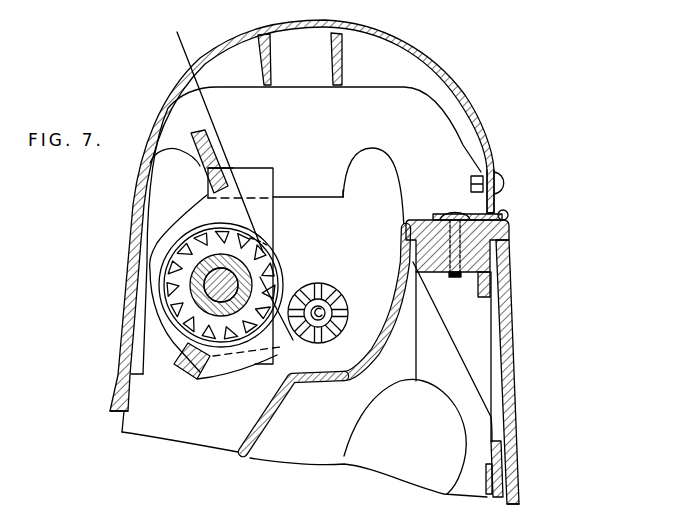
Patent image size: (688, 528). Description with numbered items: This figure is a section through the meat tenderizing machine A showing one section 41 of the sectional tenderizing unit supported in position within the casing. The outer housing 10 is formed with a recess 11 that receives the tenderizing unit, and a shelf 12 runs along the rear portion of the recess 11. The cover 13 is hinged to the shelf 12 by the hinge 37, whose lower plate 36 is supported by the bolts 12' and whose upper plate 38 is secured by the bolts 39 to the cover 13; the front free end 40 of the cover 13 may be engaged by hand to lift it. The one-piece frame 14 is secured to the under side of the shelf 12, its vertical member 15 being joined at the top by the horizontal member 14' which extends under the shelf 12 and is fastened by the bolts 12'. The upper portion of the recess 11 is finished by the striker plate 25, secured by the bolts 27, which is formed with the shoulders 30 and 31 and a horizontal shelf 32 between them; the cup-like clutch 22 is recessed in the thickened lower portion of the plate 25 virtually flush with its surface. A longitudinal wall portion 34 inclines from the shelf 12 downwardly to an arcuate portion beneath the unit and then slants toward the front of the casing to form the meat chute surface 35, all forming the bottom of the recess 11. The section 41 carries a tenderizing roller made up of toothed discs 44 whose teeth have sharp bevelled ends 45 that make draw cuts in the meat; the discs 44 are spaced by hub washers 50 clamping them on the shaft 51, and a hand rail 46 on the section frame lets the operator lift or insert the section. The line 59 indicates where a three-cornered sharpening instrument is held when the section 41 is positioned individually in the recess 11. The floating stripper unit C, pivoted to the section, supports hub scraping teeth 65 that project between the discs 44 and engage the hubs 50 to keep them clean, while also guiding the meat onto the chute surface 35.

The outer housing 10 is at (504, 241).
The recess 11 is at (421, 297).
The shelf 12 is at (373, 189).
The bolts 12' is at (467, 192).
The cover portion 13 is at (155, 123).
The frame 14 is at (531, 372).
The horizontal member 14' is at (515, 282).
The vertical member 15 is at (300, 38).
The clutches or couplers 22 is at (340, 292).
The end wear or striker metal plate 25 is at (394, 100).
The bolts 27 is at (272, 232).
The shoulder 30 is at (346, 170).
The shoulder 31 is at (198, 171).
The horizontal shelf 32 is at (285, 197).
The longitudinal wall portion 34 is at (402, 262).
The meat chute surface 35 is at (263, 417).
The lower plate 36 is at (436, 217).
The hinge 37 is at (508, 212).
The upper plate 38 is at (485, 168).
The bolts 39 is at (508, 183).
The front free end 40 is at (112, 392).
The section 41 is at (230, 167).
The draw cutting knife toothed discs 44 is at (170, 275).
The sharp bevelled ends 45 is at (272, 267).
The hand rails 46 is at (208, 137).
The hub washers 50 is at (192, 292).
The shaft 51 is at (172, 250).
The line 59 is at (190, 65).
The hub scraping teeth 65 is at (280, 350).
The meat tenderizing machine A is at (512, 407).
The floating stripper unit C is at (188, 382).